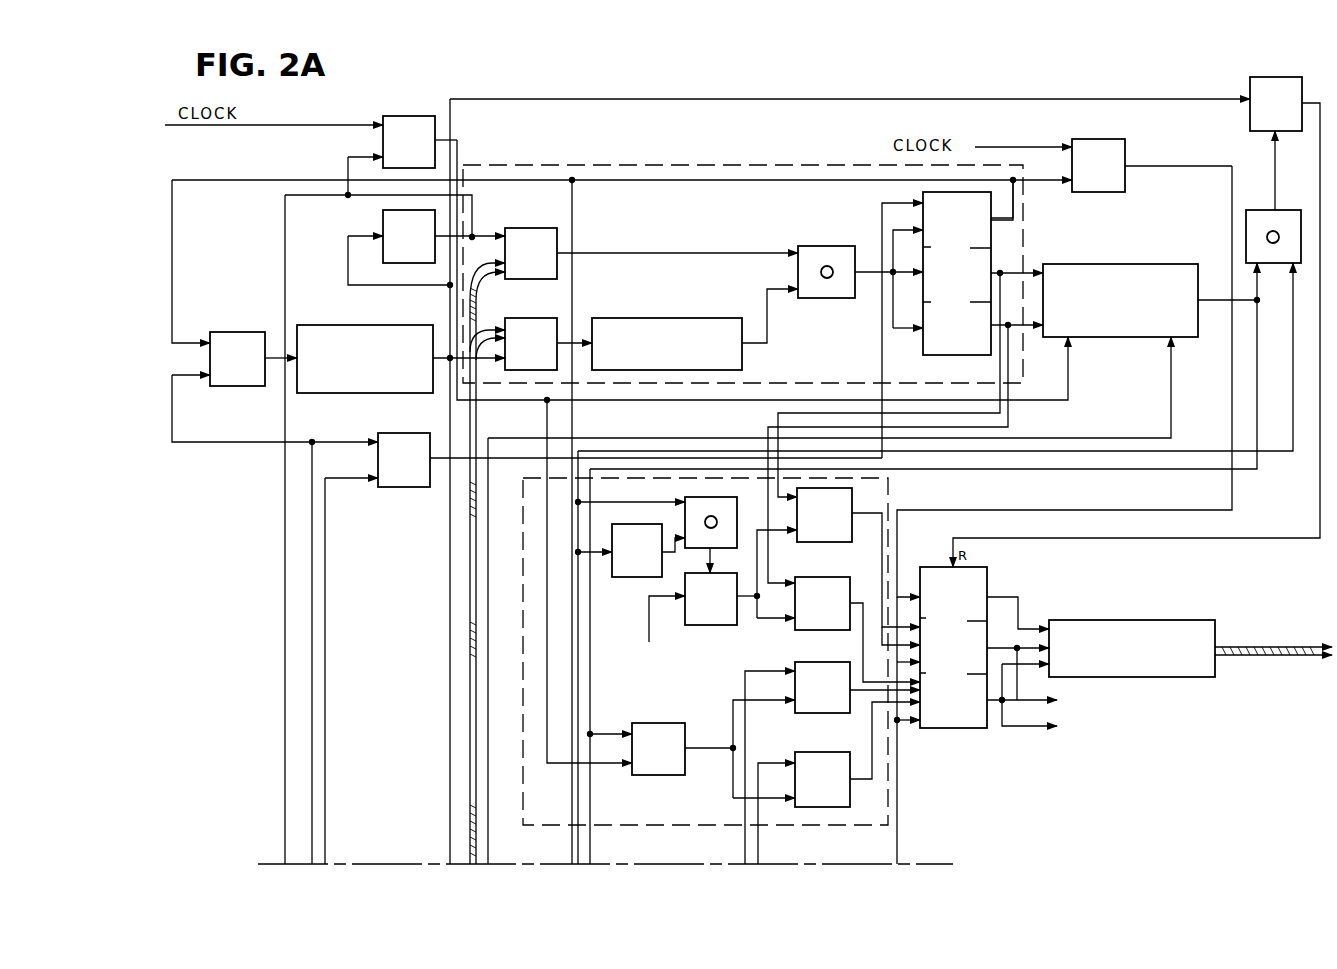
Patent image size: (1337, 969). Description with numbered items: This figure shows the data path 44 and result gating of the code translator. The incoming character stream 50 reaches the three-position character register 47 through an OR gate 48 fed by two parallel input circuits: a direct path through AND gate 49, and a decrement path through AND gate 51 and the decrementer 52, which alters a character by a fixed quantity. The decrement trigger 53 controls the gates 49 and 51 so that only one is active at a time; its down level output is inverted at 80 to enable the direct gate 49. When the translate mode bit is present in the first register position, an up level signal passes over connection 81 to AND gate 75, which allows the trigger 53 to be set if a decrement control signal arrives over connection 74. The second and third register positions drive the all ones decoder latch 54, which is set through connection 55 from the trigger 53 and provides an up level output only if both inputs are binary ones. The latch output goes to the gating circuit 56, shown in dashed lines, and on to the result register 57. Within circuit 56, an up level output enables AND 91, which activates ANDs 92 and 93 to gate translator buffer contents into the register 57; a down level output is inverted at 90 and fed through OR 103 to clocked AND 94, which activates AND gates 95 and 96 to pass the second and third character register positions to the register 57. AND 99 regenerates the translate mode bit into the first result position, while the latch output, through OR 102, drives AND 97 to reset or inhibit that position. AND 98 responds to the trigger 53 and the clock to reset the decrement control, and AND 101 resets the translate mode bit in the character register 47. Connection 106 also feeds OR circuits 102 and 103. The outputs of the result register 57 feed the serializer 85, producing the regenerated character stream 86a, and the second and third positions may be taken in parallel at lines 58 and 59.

The data path 44 is at (630, 164).
The character register 47 is at (923, 347).
The OR gate 48 is at (826, 299).
The AND gate 49 is at (529, 229).
The character stream 50 is at (478, 410).
The AND gate 51 is at (540, 318).
The decrementer 52 is at (660, 318).
The decrement trigger 53 is at (375, 391).
The all ones decoder latch 54 is at (1105, 338).
The connection 55 is at (1069, 388).
The gating circuit 56 is at (662, 828).
The result register 57 is at (952, 729).
The parallel result output line 58 is at (1040, 700).
The parallel result output line 59 is at (1025, 729).
The connection 74 is at (323, 590).
The AND gate 75 is at (225, 383).
The inverter 80 is at (383, 222).
The connection 81 is at (253, 180).
The serializer 85 is at (1153, 675).
The regenerated character stream 86a is at (1247, 656).
The inverter circuit 90 is at (628, 579).
The AND gate 91 is at (673, 723).
The AND gate 92 is at (818, 714).
The AND gate 93 is at (822, 753).
The AND gate 94 is at (712, 625).
The AND gate 95 is at (818, 539).
The AND gate 96 is at (837, 578).
The AND gate 97 is at (1254, 118).
The AND gate 98 is at (400, 115).
The AND gate 99 is at (1086, 191).
The AND gate 101 is at (405, 486).
The OR circuit 102 is at (1264, 211).
The OR circuit 103 is at (695, 500).
The connection 106 is at (575, 844).